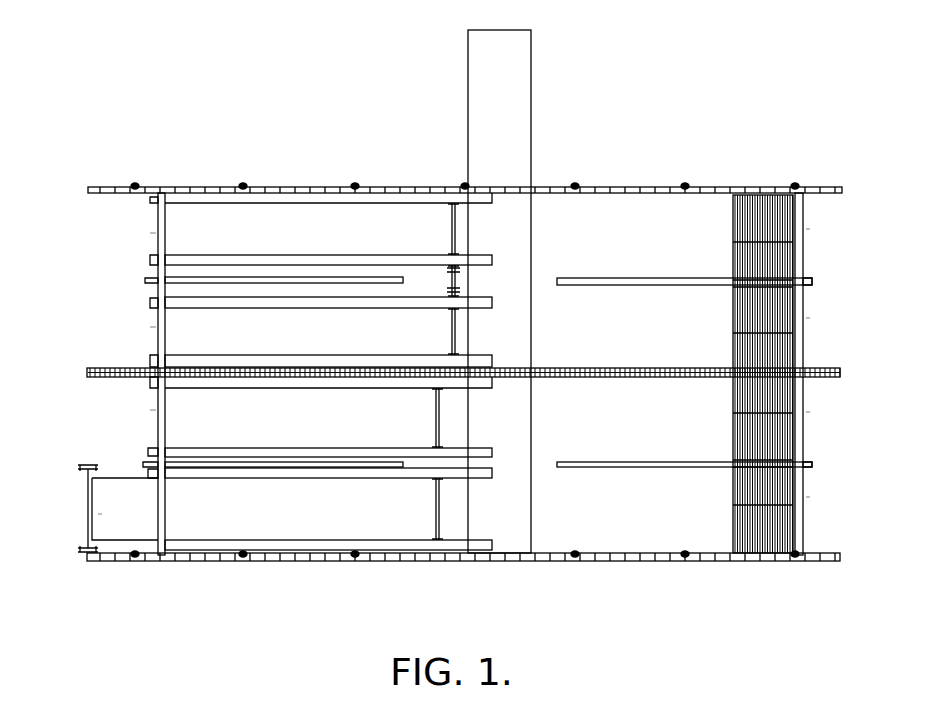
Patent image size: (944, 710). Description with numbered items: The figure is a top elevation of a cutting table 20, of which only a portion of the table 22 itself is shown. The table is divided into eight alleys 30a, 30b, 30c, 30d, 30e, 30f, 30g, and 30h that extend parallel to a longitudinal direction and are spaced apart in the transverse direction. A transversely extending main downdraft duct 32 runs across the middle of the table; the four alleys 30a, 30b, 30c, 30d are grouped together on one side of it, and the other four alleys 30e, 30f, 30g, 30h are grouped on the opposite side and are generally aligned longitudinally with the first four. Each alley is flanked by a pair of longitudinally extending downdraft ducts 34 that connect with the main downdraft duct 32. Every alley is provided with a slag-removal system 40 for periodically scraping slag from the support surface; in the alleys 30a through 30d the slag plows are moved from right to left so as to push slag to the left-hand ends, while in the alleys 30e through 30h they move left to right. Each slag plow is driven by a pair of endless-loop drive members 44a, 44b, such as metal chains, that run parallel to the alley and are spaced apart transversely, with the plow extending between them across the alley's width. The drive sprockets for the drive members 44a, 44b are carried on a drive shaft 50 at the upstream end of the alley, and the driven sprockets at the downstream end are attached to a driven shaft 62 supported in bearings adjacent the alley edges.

The cutting table 20 is at (802, 148).
The table 22 is at (738, 217).
The main downdraft duct 32 is at (478, 83).
The longitudinally extending downdraft ducts 34 is at (377, 203).
The slag-removal system 40 is at (384, 544).
The drive shaft 50 is at (432, 509).
The driven shaft 62 is at (88, 528).
The drive member 44a is at (125, 543).
The drive member 44b is at (115, 478).
The alley 30a is at (102, 518).
The alley 30b is at (152, 414).
The alley 30c is at (155, 327).
The alley 30d is at (155, 232).
The alley 30e is at (810, 497).
The alley 30f is at (810, 412).
The alley 30g is at (812, 318).
The alley 30h is at (812, 228).